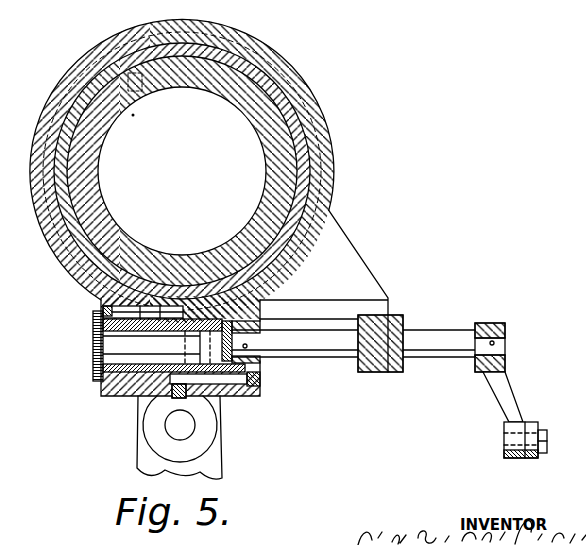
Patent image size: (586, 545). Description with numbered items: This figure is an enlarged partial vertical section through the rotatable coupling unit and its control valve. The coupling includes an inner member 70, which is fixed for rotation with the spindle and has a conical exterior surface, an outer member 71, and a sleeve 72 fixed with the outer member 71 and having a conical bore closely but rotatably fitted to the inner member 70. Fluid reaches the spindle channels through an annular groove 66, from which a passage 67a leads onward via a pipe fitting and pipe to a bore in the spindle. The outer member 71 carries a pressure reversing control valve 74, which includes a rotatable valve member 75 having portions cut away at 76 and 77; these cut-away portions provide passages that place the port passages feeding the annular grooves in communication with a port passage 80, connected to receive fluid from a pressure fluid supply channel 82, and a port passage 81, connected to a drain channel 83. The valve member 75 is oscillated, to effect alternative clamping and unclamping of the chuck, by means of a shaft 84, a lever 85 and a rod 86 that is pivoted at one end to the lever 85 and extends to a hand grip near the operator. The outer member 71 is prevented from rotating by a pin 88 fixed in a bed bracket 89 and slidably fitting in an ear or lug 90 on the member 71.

The annular groove 66 is at (88, 50).
The inner member 70 is at (254, 100).
The sleeve 72 is at (287, 100).
The outer member 71 is at (307, 117).
The passage 67a is at (140, 90).
The port passage 80 is at (156, 298).
The pressure fluid supply channel 82 is at (100, 311).
The cut-away portion 77 is at (125, 327).
The rotatable valve member 75 is at (123, 343).
The pressure reversing control valve 74 is at (80, 368).
The cut-away portion 76 is at (255, 368).
The port passage 81 is at (225, 396).
The drain channel 83 is at (155, 400).
The pin 88 is at (173, 423).
The bed bracket 89 is at (155, 462).
The ear or lug 90 is at (197, 438).
The shaft 84 is at (333, 345).
The lever 85 is at (500, 392).
The rod 86 is at (530, 423).